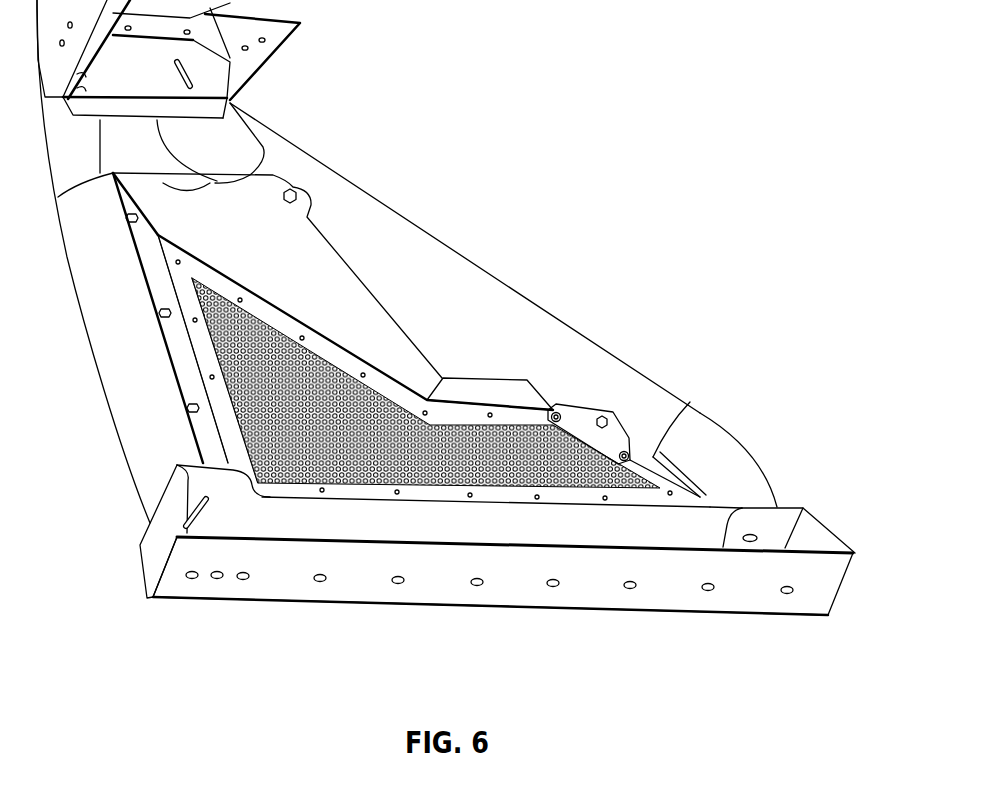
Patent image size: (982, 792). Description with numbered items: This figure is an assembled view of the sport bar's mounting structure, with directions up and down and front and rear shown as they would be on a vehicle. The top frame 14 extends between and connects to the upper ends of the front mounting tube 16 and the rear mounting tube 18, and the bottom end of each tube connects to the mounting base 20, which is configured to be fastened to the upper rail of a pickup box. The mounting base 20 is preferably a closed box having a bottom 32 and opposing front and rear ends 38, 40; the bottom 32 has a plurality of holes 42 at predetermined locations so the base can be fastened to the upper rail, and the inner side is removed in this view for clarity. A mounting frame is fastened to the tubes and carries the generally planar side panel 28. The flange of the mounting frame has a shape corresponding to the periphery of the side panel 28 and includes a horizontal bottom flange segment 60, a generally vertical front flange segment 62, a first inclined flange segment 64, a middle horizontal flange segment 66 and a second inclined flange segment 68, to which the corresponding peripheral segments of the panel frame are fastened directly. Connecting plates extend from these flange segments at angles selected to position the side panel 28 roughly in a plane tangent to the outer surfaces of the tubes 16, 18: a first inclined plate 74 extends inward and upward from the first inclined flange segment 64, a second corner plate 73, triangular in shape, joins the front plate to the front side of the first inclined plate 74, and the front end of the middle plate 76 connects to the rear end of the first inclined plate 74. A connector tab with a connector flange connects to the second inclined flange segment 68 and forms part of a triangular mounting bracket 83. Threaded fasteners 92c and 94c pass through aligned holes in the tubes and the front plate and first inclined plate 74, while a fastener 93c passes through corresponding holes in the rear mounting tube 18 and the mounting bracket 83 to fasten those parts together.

The top frame 14 is at (297, 37).
The front mounting tube 16 is at (130, 387).
The rear mounting tube 18 is at (419, 233).
The mounting base 20 is at (337, 603).
The side panel 28 is at (297, 460).
The bottom of mounting base 32 is at (667, 590).
The front end of mounting base 38 is at (147, 562).
The rear end of mounting base 40 is at (817, 530).
The holes 42 is at (553, 588).
The bottom flange segment 60 is at (420, 490).
The generally vertical front flange segment 62 is at (224, 423).
The first inclined flange segment 64 is at (281, 312).
The middle horizontal flange segment 66 is at (458, 407).
The second inclined flange segment 68 is at (658, 477).
The second corner plate 73 is at (213, 181).
The first inclined plate 74 is at (277, 256).
The middle plate 76 is at (486, 385).
The mounting bracket 83 is at (585, 417).
The fastener 92c is at (160, 311).
The fastener 93c is at (553, 416).
The fastener 94c is at (294, 188).